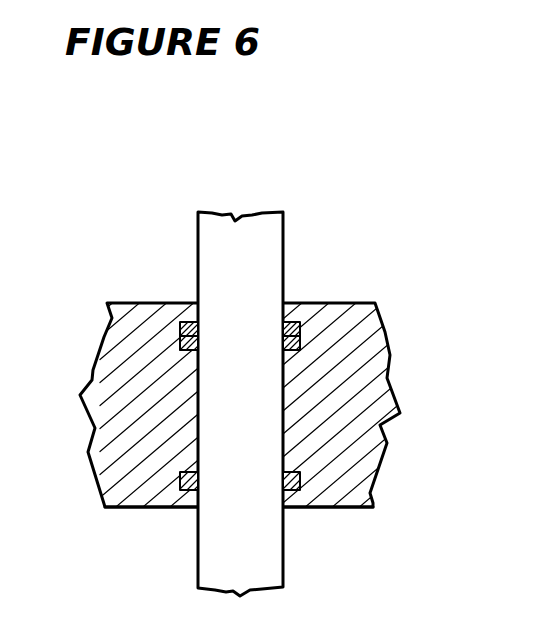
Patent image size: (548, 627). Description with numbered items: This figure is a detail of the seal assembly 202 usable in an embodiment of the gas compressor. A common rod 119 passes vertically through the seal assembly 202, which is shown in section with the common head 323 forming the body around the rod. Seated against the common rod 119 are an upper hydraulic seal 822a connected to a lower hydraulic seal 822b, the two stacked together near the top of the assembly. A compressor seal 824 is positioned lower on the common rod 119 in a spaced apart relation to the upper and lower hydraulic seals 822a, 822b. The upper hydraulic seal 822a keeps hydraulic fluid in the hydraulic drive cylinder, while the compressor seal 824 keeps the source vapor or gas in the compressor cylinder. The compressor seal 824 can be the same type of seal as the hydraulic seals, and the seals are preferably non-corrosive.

The common rod 119 is at (284, 266).
The seal assembly 202 is at (93, 336).
The common head 323 is at (143, 507).
The upper hydraulic seal 822a is at (300, 328).
The lower hydraulic seal 822b is at (300, 345).
The compressor seal 824 is at (300, 483).